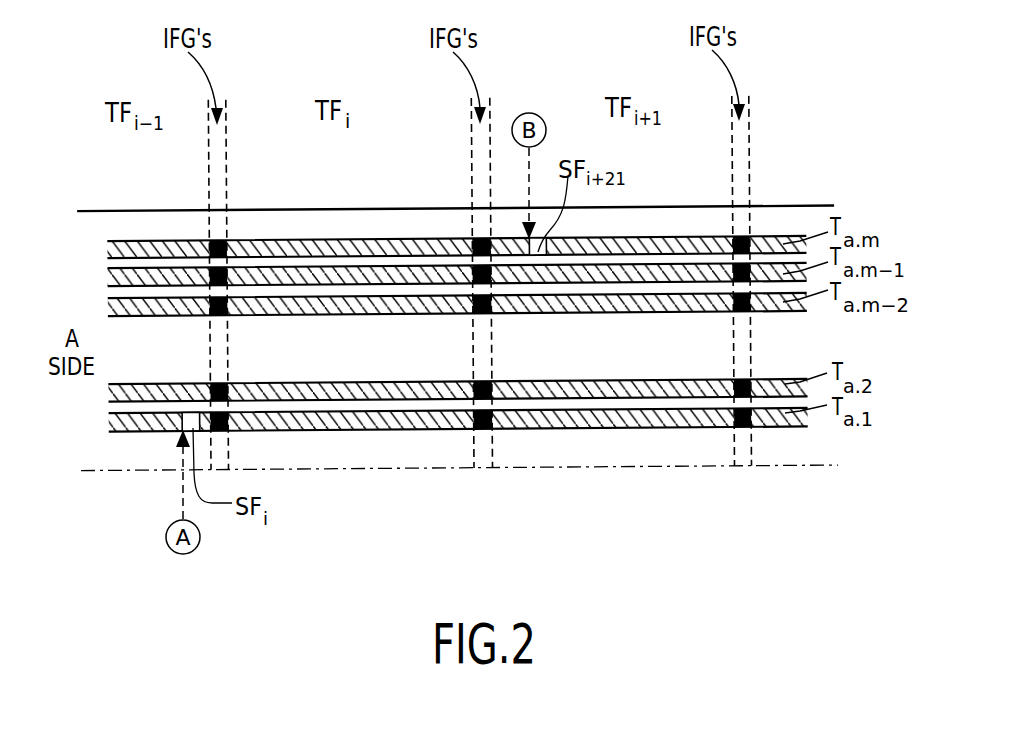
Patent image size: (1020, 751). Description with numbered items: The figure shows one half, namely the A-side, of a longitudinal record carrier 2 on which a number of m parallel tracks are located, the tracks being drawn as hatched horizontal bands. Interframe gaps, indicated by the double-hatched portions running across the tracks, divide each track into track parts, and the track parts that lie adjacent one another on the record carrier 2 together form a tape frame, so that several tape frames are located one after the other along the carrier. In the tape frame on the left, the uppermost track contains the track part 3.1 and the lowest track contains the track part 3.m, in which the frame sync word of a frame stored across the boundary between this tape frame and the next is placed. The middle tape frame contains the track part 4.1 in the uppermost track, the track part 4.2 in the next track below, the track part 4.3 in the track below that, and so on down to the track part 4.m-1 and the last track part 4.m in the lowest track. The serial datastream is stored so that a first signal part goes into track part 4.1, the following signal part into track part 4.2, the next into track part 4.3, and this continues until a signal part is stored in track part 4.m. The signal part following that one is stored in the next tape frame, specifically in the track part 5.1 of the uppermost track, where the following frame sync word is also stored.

The record carrier 2 is at (818, 206).
The track part 3.1 is at (164, 240).
The track part 3.m is at (140, 424).
The track part 4.1 is at (276, 240).
The track part 4.2 is at (333, 268).
The track part 4.3 is at (298, 310).
The track part 4.m-1 is at (365, 392).
The track part 4.m is at (366, 422).
The track part 5.1 is at (706, 237).